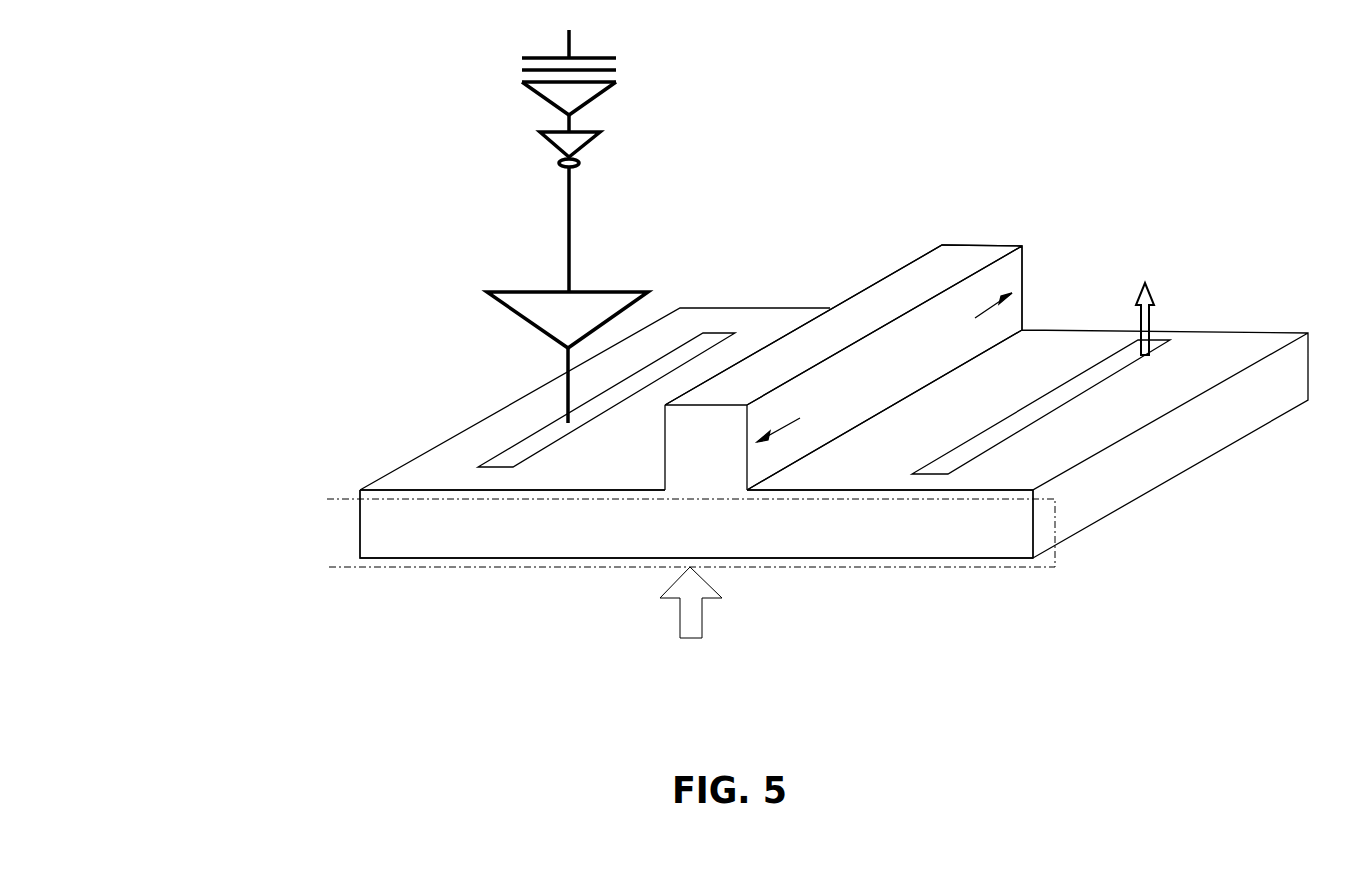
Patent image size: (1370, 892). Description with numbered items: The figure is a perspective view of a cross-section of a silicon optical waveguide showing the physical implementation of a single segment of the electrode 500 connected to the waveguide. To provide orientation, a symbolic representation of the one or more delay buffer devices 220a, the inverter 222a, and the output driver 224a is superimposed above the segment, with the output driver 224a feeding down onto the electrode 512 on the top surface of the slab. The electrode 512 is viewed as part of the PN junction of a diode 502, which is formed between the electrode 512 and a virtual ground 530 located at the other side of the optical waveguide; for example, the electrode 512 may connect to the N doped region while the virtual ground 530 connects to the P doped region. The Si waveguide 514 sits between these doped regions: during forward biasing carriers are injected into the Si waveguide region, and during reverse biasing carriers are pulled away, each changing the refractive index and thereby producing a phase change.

The electrode segment 500 is at (320, 126).
The diode 502 is at (327, 532).
The electrode 512 is at (520, 462).
The Si waveguide 514 is at (718, 447).
The virtual ground 530 is at (1157, 340).
The delay buffer device 220a is at (585, 92).
The inverter 222a is at (575, 138).
The output driver 224a is at (537, 300).